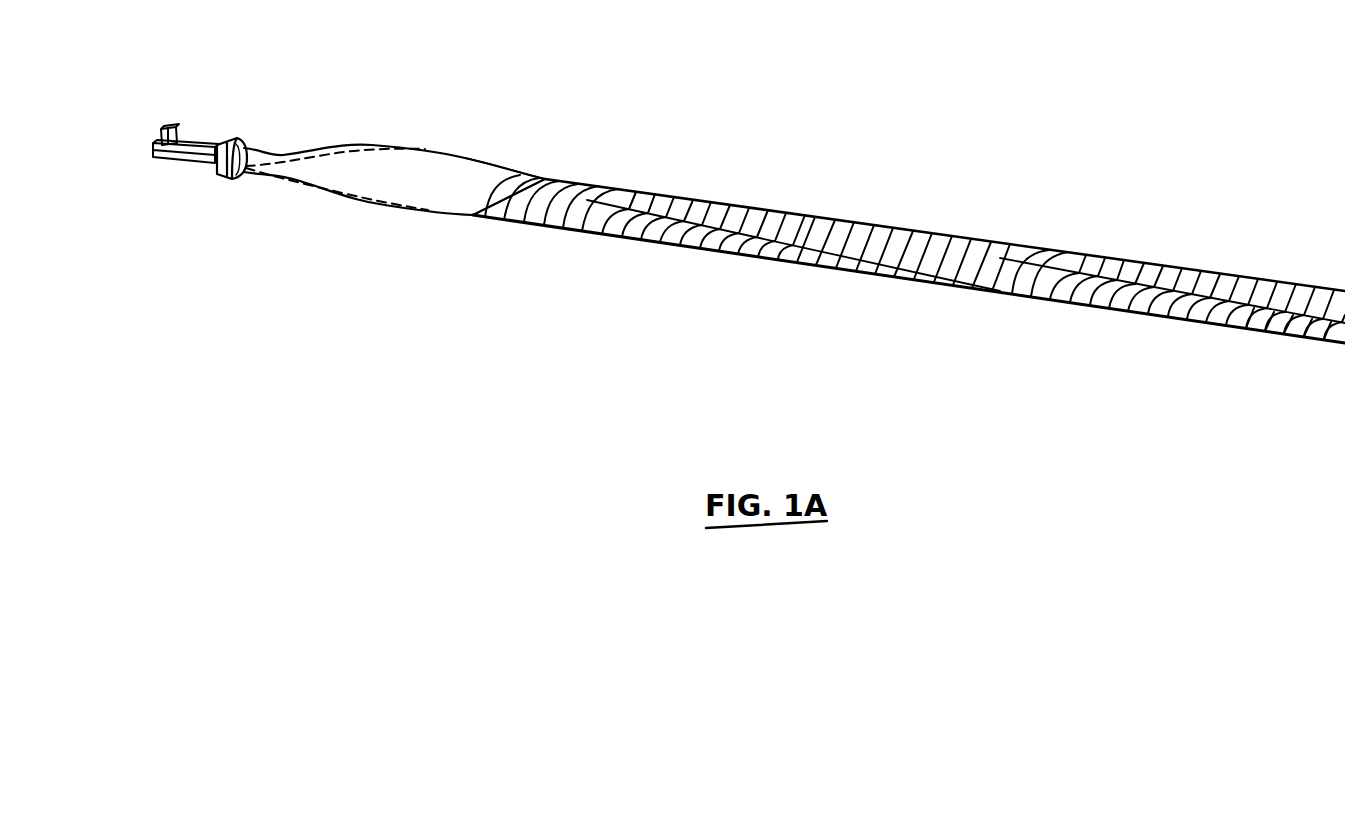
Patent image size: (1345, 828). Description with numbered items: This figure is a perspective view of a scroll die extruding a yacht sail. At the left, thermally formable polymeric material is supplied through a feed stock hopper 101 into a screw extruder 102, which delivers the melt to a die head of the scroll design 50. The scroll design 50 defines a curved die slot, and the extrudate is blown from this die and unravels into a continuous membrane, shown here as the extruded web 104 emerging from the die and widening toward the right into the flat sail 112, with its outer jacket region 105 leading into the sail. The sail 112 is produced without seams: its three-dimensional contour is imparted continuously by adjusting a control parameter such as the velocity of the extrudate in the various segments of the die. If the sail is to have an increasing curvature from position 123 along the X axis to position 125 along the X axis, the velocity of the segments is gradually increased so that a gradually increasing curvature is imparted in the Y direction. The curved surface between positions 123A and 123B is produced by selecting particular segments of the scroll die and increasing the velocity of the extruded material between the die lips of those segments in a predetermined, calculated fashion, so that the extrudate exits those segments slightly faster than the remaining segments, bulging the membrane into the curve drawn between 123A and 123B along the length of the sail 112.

The feed stock hopper 101 is at (163, 128).
The screw extruder 102 is at (193, 143).
The scroll design 50 is at (232, 138).
The optical fiber cable assembly 104 is at (267, 141).
The cable jacket 105 is at (498, 162).
The yacht sail 112 is at (620, 194).
The position along the X axis 123 is at (909, 256).
The curved surface position 123A is at (607, 228).
The curved surface position 123B is at (647, 197).
The position along the X axis 125 is at (503, 193).